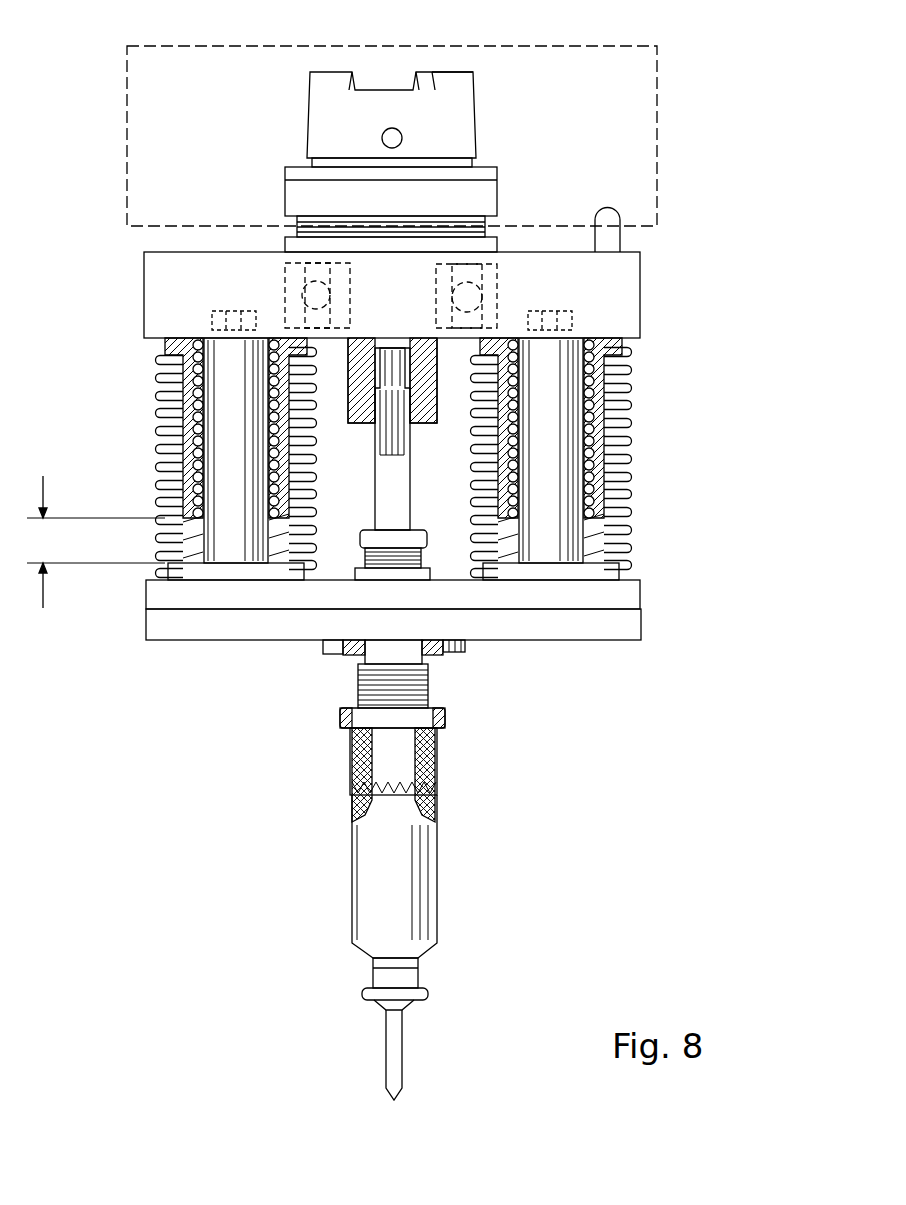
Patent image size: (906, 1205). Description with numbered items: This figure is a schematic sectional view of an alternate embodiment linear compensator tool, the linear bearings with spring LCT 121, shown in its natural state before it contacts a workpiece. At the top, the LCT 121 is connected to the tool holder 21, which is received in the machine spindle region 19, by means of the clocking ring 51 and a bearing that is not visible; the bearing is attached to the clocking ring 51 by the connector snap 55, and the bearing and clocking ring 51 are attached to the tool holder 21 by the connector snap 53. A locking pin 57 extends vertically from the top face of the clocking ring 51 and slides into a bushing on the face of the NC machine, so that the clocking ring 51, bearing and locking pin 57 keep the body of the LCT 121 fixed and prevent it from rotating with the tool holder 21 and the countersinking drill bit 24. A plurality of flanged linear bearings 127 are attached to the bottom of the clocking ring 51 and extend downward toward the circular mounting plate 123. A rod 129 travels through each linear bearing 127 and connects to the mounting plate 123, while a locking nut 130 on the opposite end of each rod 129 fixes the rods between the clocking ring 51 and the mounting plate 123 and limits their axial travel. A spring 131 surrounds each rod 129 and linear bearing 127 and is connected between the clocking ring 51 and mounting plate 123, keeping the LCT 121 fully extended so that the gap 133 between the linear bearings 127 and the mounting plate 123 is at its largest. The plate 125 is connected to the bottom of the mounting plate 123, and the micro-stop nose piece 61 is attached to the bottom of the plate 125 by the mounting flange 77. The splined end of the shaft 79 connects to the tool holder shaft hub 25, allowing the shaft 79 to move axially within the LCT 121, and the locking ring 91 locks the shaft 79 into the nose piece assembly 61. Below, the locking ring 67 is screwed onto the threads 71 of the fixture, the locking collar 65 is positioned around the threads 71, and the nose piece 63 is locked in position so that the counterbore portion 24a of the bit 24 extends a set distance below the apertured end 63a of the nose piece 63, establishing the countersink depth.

The machine tool spindle (dashed) 19 is at (657, 113).
The tool holder 21 is at (476, 125).
The locking pin 57 is at (619, 232).
The clocking ring 51 is at (628, 311).
The connector snap 55 is at (285, 278).
The connector snap 53 is at (498, 277).
The locking nut 130 is at (228, 313).
The rod 129 is at (225, 540).
The spring 131 is at (153, 383).
The flanged linear bearing 127 is at (160, 497).
The gap 133 is at (93, 542).
The tool holder shaft hub 25 is at (410, 378).
The shaft 79 is at (393, 465).
The locking ring 91 is at (428, 542).
The mounting plate 123 is at (637, 588).
The plate 125 is at (637, 627).
The linear bearings with spring LCT 121 is at (718, 490).
The mounting flange 77 is at (335, 655).
The threads 71 is at (357, 691).
The locking ring 67 is at (343, 716).
The locking collar 65 is at (352, 757).
The nose piece 63 is at (440, 885).
The micro-stop nose piece 61 is at (475, 824).
The end of nose piece 63a is at (430, 993).
The counterbore portion 24a is at (405, 1006).
The countersinking drill bit 24 is at (390, 1062).